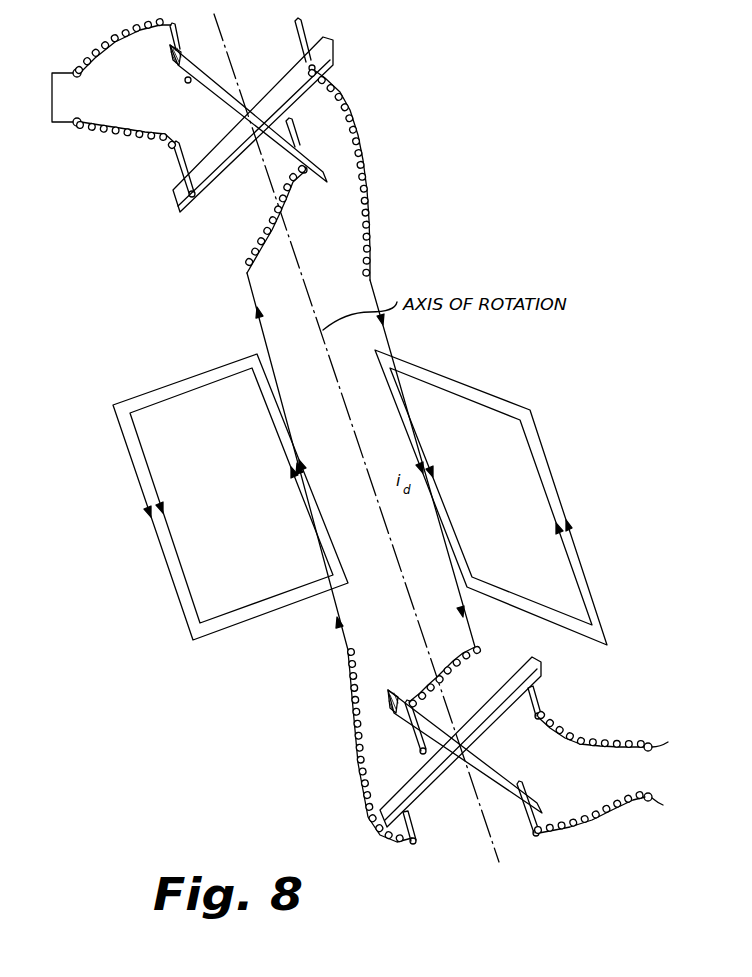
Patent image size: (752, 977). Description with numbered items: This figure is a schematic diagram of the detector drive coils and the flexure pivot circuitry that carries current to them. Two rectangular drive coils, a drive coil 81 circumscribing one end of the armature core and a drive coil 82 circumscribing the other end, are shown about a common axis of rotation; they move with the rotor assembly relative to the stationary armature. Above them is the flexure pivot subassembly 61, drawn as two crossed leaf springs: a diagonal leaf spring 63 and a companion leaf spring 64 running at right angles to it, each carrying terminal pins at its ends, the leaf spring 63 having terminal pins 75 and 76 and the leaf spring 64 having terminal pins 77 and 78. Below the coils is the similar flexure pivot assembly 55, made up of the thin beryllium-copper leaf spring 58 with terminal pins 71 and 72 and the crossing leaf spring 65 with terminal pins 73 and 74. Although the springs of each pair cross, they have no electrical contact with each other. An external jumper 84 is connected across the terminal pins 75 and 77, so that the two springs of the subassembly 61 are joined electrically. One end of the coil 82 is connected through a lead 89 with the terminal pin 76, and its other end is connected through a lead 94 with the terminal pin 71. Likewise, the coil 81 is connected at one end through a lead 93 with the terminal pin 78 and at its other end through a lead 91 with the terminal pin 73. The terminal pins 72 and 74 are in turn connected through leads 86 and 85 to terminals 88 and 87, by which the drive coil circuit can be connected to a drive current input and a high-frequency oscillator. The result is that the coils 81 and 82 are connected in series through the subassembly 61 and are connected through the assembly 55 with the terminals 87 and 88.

The flexure pivot assembly 55 is at (334, 778).
The leaf spring 58 is at (490, 763).
The flexure pivot subassembly 61 is at (380, 95).
The leaf spring 63 is at (223, 160).
The leaf spring 64 is at (233, 106).
The leaf spring 65 is at (435, 778).
The terminal pin 71 is at (417, 744).
The terminal pin 72 is at (527, 818).
The terminal pin 73 is at (415, 821).
The terminal pin 74 is at (540, 697).
The terminal pin 75 is at (177, 163).
The terminal pin 76 is at (297, 41).
The terminal pin 77 is at (176, 38).
The terminal pin 78 is at (302, 131).
The drive coil 81 is at (168, 580).
The drive coil 82 is at (597, 598).
The external jumper 84 is at (52, 97).
The lead 85 is at (598, 748).
The lead 86 is at (597, 822).
The terminal 87 is at (669, 750).
The terminal 88 is at (665, 807).
The lead 89 is at (373, 191).
The lead 91 is at (345, 721).
The lead 93 is at (268, 228).
The lead 94 is at (434, 676).